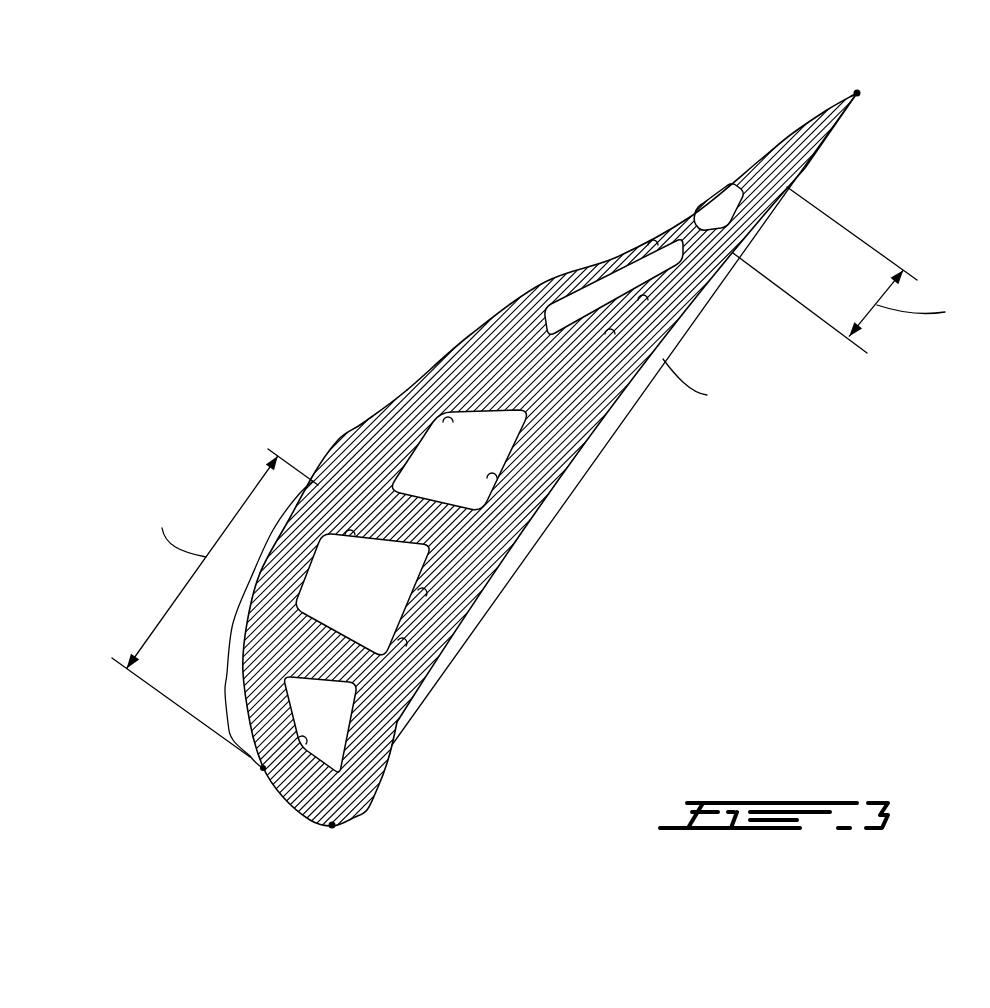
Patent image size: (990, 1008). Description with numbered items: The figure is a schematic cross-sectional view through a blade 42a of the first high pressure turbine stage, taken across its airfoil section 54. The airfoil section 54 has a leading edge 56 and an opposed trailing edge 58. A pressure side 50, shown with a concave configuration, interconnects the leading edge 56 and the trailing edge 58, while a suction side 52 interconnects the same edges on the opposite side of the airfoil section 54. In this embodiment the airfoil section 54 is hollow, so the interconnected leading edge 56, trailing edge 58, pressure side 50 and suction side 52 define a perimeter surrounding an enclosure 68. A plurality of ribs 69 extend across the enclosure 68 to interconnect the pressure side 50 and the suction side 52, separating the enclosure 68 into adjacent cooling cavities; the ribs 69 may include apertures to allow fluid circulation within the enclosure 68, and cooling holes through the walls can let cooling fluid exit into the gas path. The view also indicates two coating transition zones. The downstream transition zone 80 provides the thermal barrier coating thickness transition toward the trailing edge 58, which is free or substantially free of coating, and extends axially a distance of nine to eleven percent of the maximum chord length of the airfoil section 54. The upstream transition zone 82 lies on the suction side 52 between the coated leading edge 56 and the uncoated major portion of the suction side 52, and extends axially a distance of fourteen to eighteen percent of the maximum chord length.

The blade 42a is at (495, 472).
The pressure side 50 is at (495, 472).
The suction side 52 is at (388, 403).
The airfoil section 54 is at (363, 232).
The leading edge 56 is at (365, 812).
The trailing edge 58 is at (858, 93).
The enclosure 68 is at (553, 335).
The ribs 69 is at (390, 513).
The downstream transition zone 80 is at (787, 187).
The upstream transition zone 82 is at (303, 484).